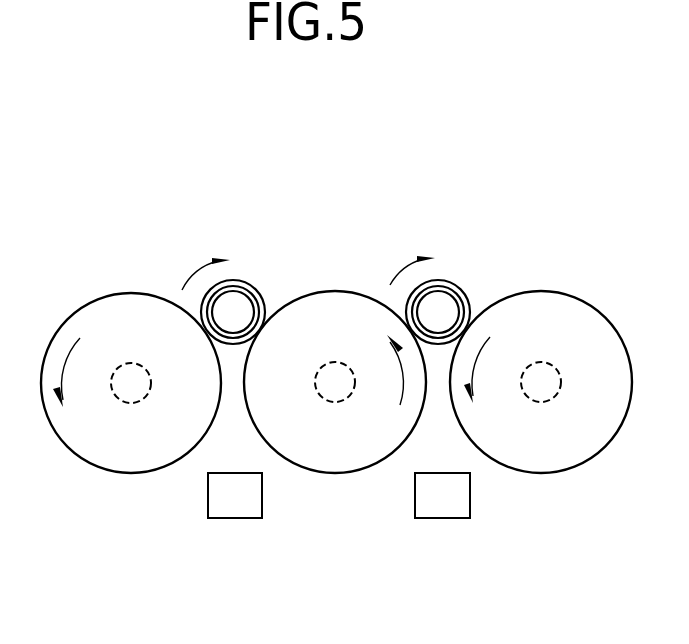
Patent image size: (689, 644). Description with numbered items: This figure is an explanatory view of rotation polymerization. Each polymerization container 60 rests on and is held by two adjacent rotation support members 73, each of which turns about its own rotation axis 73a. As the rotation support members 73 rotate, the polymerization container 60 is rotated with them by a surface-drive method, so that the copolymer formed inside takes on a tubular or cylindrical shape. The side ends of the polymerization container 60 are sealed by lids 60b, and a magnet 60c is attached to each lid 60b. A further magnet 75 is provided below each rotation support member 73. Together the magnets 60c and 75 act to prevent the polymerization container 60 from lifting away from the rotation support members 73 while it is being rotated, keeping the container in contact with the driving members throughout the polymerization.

The polymerization container 60 is at (252, 270).
The lid 60b is at (256, 298).
The magnet 60c is at (255, 309).
The rotation support member 73 is at (85, 462).
The rotation axis 73a is at (137, 403).
The magnet 75 is at (236, 518).